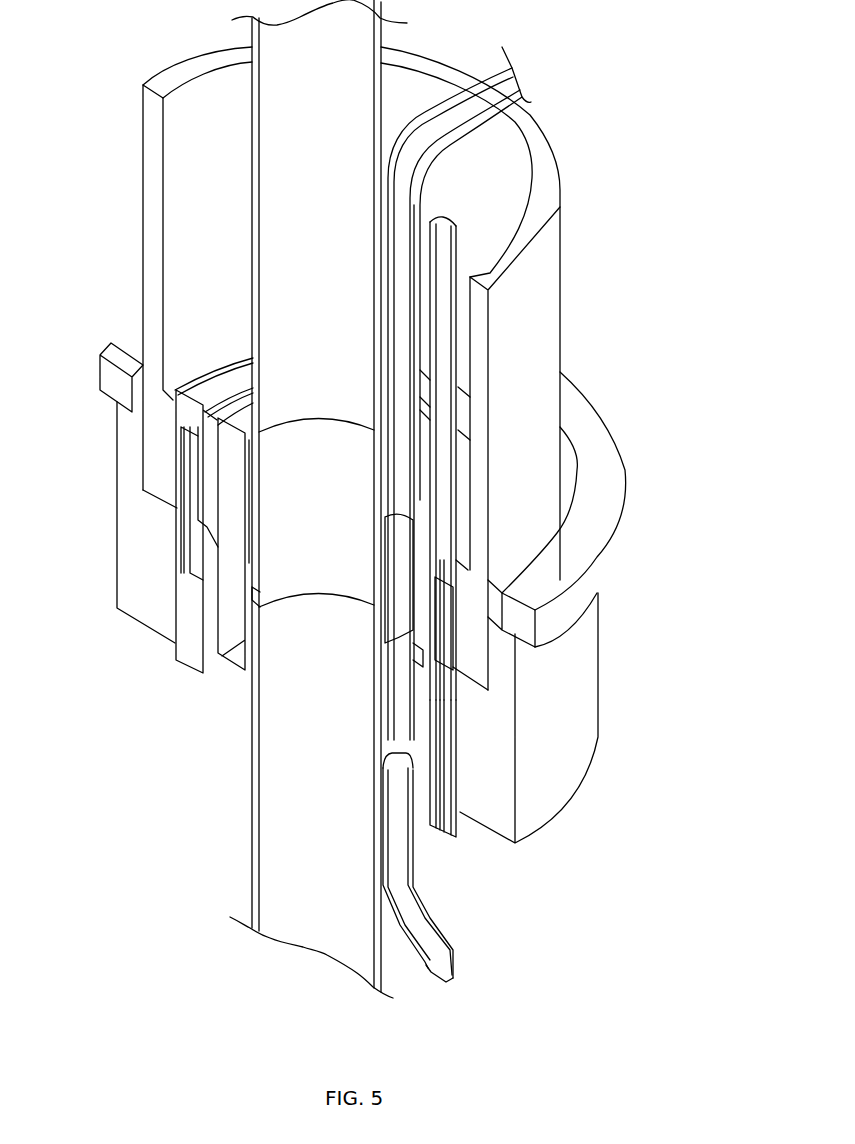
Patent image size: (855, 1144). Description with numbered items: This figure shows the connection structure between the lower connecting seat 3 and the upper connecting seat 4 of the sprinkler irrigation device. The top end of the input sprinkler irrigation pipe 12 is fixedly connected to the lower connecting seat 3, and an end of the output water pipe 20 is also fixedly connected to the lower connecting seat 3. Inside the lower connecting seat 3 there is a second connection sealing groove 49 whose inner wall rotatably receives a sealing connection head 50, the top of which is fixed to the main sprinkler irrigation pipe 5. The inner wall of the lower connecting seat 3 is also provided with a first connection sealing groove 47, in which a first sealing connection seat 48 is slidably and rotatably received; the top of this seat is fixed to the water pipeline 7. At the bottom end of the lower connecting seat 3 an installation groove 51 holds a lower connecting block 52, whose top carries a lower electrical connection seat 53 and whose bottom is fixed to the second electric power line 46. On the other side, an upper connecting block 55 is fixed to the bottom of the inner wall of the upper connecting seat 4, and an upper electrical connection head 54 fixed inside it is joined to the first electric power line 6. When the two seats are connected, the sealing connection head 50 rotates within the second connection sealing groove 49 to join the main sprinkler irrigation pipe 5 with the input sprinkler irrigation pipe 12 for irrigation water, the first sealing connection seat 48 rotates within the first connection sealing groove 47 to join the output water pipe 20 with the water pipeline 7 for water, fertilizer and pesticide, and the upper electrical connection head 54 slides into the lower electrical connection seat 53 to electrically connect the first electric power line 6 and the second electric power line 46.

The lower connecting seat 3 is at (574, 706).
The upper connecting seat 4 is at (523, 465).
The main sprinkler irrigation pipe 5 is at (310, 114).
The first electric power line 6 is at (460, 243).
The water pipeline 7 is at (517, 77).
The input sprinkler irrigation pipe 12 is at (292, 847).
The output water pipe 20 is at (453, 980).
The second electric power line 46 is at (453, 838).
The first connection sealing groove 47 is at (415, 635).
The first sealing connection seat 48 is at (388, 560).
The second connection sealing groove 49 is at (260, 607).
The sealing connection head 50 is at (268, 470).
The installation groove 51 is at (175, 630).
The lower connecting block 52 is at (190, 587).
The lower electrical connection seat 53 is at (200, 535).
The upper electrical connection head 54 is at (428, 607).
The upper connecting block 55 is at (180, 385).